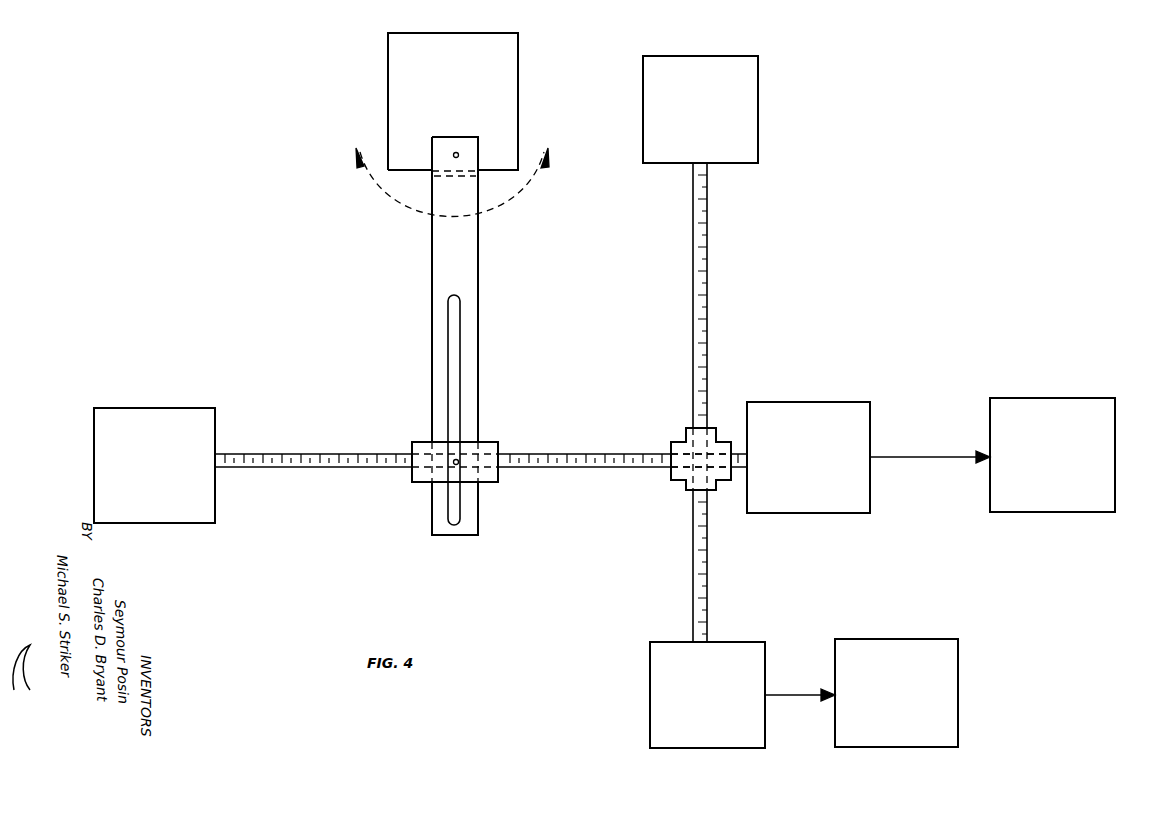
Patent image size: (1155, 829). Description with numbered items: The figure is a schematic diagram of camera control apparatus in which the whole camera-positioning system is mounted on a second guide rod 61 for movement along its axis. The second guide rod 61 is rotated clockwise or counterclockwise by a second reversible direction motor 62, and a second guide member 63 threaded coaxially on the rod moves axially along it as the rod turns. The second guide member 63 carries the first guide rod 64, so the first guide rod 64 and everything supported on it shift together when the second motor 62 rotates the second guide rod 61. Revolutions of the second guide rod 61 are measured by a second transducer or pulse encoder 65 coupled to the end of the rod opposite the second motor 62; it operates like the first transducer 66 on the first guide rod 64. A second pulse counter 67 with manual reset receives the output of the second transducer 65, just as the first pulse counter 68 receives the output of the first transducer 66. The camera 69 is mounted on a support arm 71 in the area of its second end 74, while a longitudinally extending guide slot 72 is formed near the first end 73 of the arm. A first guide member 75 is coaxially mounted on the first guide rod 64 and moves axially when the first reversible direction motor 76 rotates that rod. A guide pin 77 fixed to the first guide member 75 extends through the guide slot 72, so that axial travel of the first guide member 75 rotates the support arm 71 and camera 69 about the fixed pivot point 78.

The second guide rod 61 is at (709, 284).
The second reversible direction motor 62 is at (748, 80).
The second guide member 63 is at (721, 428).
The first guide rod 64 is at (535, 470).
The second transducer or pulse encoder 65 is at (750, 660).
The first transducer 66 is at (862, 487).
The second pulse counter 67 is at (895, 647).
The first pulse counter 68 is at (1100, 488).
The camera 69 is at (500, 82).
The support arm 71 is at (464, 272).
The guide slot 72 is at (458, 340).
The first end 73 is at (432, 530).
The second end 74 is at (455, 182).
The first guide member 75 is at (410, 480).
The first reversible direction motor 76 is at (170, 526).
The guide pin 77 is at (458, 461).
The fixed pivot point 78 is at (453, 155).